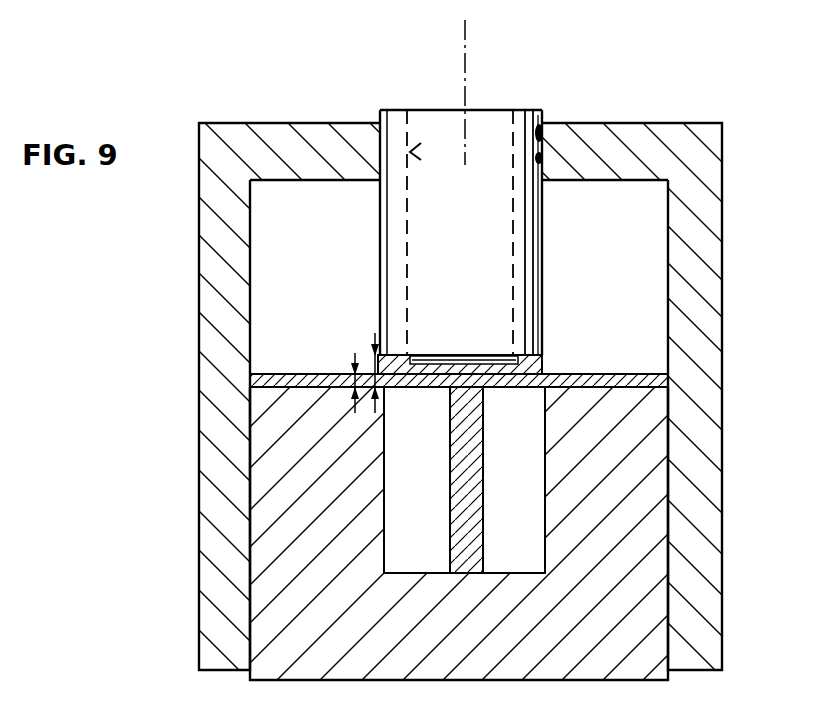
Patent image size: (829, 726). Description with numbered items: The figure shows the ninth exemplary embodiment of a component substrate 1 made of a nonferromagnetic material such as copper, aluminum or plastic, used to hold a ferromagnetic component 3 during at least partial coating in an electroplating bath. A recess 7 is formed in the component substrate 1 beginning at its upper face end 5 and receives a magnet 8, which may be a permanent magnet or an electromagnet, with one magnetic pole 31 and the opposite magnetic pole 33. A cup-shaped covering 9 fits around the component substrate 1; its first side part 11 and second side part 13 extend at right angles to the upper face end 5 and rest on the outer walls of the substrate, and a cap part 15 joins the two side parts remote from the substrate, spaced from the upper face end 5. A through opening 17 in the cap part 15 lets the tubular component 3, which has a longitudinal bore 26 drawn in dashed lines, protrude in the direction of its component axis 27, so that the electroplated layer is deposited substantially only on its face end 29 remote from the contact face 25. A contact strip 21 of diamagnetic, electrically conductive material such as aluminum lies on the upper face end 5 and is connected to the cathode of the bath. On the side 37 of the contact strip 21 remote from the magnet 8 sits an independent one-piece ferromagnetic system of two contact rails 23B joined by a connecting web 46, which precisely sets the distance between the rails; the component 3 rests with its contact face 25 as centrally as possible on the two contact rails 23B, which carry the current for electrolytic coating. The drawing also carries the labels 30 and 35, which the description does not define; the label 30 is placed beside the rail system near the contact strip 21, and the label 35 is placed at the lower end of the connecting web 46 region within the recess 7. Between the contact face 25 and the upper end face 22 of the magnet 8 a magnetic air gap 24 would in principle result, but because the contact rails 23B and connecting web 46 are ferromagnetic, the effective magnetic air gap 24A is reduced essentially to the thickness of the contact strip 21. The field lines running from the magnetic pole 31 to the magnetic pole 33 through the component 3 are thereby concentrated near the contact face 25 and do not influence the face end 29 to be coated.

The component substrate 1 is at (247, 516).
The component 3 is at (477, 248).
The upper face end 5 is at (607, 377).
The recess 7 is at (387, 461).
The magnet 8 is at (403, 512).
The covering 9 is at (414, 386).
The first side part 11 is at (205, 415).
The second side part 13 is at (708, 515).
The cap part 15 is at (645, 130).
The through opening 17 is at (540, 112).
The contact strip 21 is at (295, 372).
The upper end face 22 is at (527, 396).
The contact rail 23B is at (460, 328).
The magnetic air gap 24 is at (378, 340).
The effective magnetic air gap 24A is at (348, 368).
The contact face 25 is at (490, 358).
The longitudinal bore 26 is at (420, 145).
The component axis 27 is at (470, 53).
The face end 29 is at (500, 103).
The gap 30 is at (543, 362).
The magnetic pole 31 is at (394, 416).
The magnetic pole 33 is at (533, 421).
The separator bottom 35 is at (470, 576).
The side 37 is at (574, 370).
The connecting web 46 is at (447, 480).